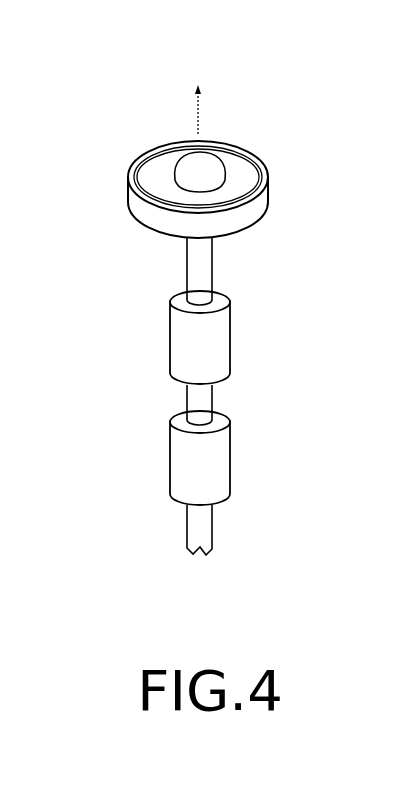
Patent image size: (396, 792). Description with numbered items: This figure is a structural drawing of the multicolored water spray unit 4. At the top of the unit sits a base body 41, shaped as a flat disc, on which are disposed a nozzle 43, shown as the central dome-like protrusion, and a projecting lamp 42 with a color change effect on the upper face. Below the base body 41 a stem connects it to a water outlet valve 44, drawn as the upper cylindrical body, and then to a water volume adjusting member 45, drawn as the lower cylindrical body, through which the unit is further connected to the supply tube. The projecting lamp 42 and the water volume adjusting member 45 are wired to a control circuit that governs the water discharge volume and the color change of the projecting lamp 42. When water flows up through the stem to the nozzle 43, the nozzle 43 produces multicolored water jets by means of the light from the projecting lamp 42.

The multicolored water spray unit 4 is at (171, 126).
The base body 41 is at (129, 204).
The projecting lamp 42 is at (147, 172).
The nozzle 43 is at (210, 170).
The water outlet valve 44 is at (178, 345).
The water volume adjusting member 45 is at (178, 460).